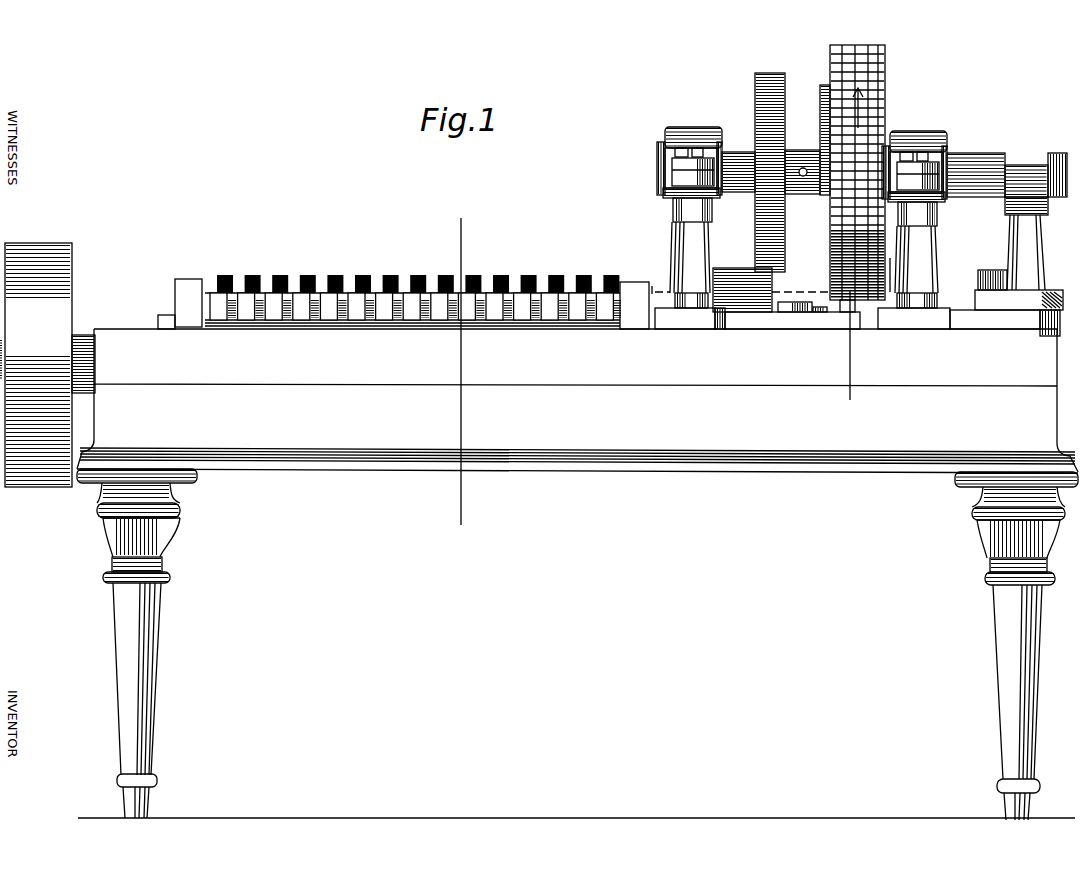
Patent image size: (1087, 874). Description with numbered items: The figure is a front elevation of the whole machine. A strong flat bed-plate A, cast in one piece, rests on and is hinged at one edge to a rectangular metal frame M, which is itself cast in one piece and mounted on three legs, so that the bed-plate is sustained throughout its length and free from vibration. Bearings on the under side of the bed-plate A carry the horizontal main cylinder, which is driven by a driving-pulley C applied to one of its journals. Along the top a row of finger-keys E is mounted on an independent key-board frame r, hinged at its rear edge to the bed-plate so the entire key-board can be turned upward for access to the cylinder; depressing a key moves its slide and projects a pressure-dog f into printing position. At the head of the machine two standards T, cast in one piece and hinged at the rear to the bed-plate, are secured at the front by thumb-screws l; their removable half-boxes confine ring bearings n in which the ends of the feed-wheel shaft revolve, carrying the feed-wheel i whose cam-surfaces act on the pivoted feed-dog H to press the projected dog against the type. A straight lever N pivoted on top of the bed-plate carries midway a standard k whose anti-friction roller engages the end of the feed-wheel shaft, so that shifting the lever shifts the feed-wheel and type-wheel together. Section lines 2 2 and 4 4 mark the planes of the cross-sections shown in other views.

The driving-pulley C is at (47, 365).
The bed-plate A is at (530, 355).
The rectangular metal frame M is at (577, 602).
The finger-keys E is at (412, 291).
The key-board frame r is at (412, 304).
The section line 2 2 is at (460, 369).
The bearings n is at (660, 150).
The pressure-dog f is at (786, 100).
The standards T is at (677, 258).
The thumb-screws l is at (684, 314).
The standard k is at (735, 268).
The feed-dog H is at (834, 312).
The feed-wheel i is at (940, 300).
The lever N is at (1006, 313).
The section line 4 4 is at (872, 322).